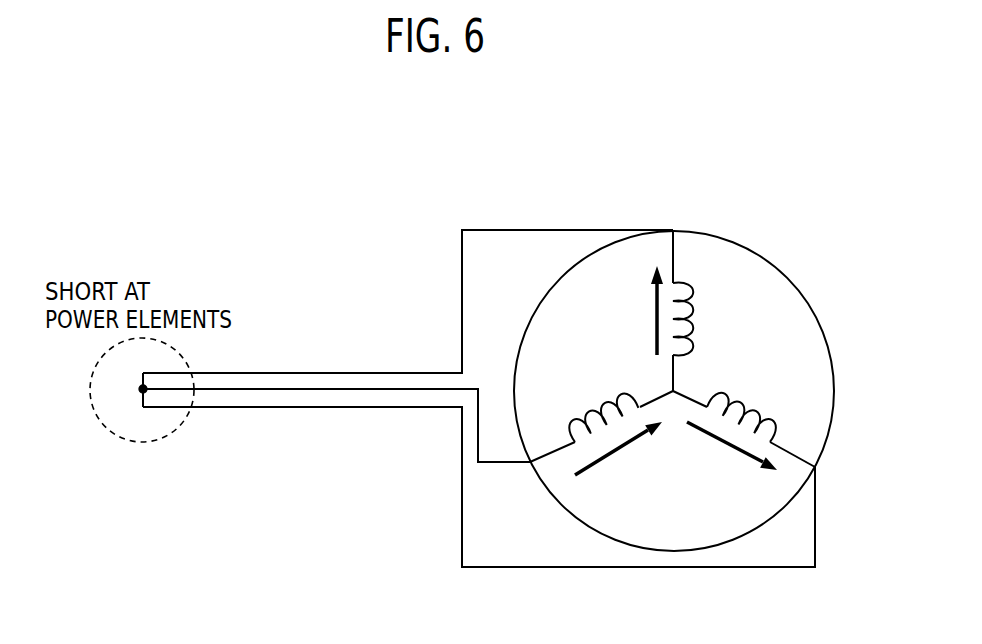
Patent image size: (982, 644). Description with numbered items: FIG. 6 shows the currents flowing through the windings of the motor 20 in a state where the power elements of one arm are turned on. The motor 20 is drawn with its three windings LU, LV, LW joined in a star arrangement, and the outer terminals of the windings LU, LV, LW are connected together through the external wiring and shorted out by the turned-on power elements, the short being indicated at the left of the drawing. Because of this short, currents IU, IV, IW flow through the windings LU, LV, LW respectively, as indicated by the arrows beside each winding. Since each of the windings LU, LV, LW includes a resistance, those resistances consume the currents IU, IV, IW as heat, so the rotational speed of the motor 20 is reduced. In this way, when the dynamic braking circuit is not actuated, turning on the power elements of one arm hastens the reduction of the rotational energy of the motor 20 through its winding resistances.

The motor 20 is at (683, 403).
The winding LU is at (699, 319).
The winding LV is at (602, 404).
The winding LW is at (744, 404).
The current IU is at (646, 310).
The current IV is at (618, 456).
The current IW is at (732, 456).